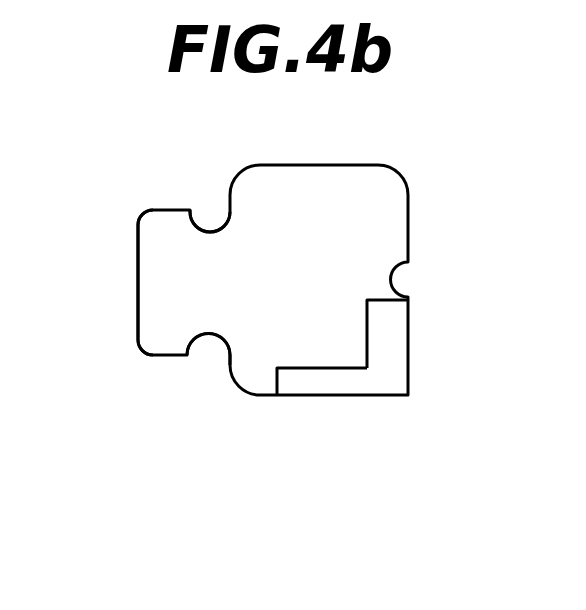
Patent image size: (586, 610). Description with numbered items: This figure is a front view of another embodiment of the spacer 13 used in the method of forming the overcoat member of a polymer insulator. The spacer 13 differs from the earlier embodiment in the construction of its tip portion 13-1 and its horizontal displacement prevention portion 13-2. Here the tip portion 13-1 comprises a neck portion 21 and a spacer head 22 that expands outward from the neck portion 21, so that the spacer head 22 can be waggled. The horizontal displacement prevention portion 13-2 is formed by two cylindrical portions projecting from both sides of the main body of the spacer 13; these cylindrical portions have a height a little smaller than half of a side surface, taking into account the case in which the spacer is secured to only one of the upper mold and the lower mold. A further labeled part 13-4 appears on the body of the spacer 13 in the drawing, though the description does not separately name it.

The spacer 13 is at (377, 153).
The tip portion 13-1 is at (190, 376).
The horizontal displacement prevention portion 13-2 is at (388, 350).
The horizontal bent portion 13-4 is at (310, 385).
The neck portion 21 is at (210, 232).
The spacer head 22 is at (145, 270).